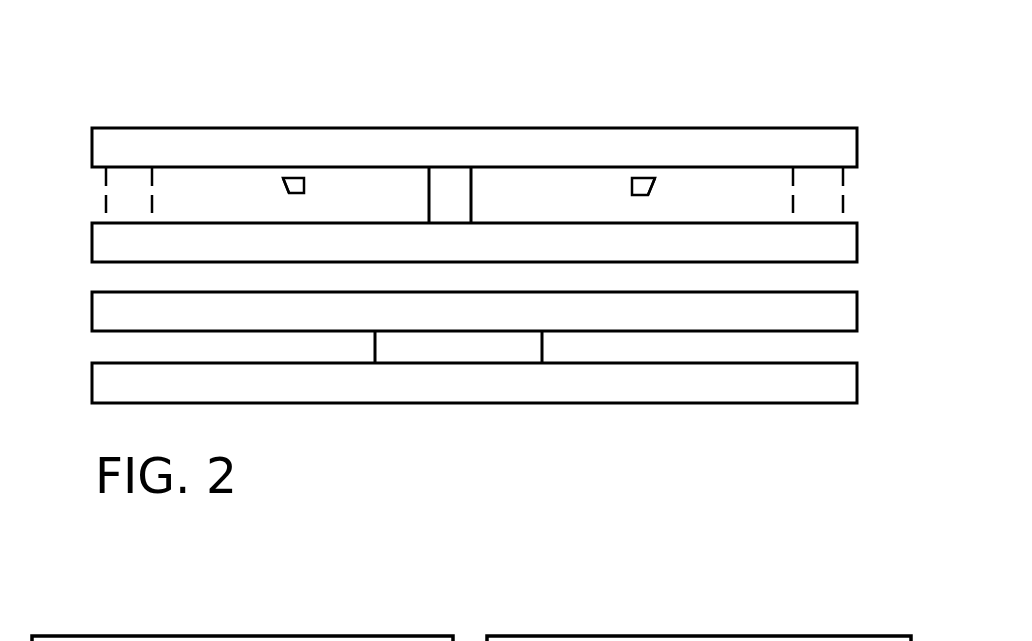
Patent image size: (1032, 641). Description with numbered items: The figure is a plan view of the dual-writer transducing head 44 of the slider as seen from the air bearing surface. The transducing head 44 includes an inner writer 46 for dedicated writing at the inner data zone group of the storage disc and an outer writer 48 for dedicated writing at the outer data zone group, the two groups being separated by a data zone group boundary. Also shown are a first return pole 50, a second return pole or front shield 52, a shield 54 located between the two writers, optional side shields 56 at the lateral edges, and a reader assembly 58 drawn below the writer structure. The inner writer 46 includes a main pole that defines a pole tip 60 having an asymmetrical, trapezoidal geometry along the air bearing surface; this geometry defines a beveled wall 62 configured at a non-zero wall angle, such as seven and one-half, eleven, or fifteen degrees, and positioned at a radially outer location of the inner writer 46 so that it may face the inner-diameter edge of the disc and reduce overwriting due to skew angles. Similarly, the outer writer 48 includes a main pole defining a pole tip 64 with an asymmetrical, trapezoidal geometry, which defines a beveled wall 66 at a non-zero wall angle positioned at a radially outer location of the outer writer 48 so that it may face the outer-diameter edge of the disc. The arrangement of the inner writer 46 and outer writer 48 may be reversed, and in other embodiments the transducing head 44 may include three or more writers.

The transducing head 44 is at (537, 458).
The inner writer 46 is at (287, 113).
The outer writer 48 is at (643, 105).
The first return pole 50 is at (852, 243).
The second return pole 52 is at (848, 137).
The shield 54 is at (462, 178).
The side shields 56 is at (117, 192).
The reader assembly 58 is at (82, 291).
The pole tip 60 is at (313, 185).
The beveled wall 62 is at (283, 180).
The pole tip 64 is at (630, 185).
The beveled wall 66 is at (655, 180).